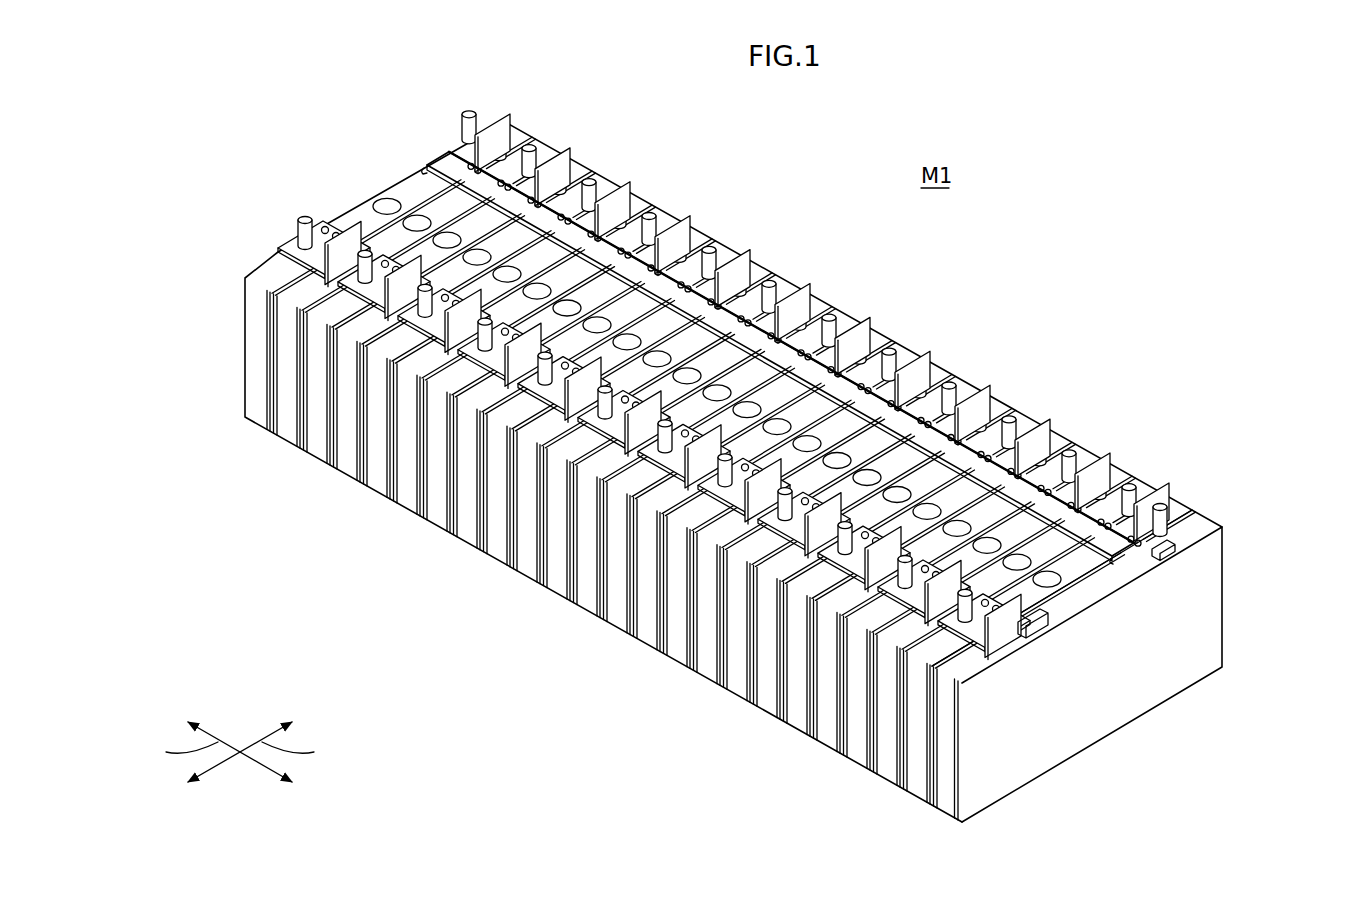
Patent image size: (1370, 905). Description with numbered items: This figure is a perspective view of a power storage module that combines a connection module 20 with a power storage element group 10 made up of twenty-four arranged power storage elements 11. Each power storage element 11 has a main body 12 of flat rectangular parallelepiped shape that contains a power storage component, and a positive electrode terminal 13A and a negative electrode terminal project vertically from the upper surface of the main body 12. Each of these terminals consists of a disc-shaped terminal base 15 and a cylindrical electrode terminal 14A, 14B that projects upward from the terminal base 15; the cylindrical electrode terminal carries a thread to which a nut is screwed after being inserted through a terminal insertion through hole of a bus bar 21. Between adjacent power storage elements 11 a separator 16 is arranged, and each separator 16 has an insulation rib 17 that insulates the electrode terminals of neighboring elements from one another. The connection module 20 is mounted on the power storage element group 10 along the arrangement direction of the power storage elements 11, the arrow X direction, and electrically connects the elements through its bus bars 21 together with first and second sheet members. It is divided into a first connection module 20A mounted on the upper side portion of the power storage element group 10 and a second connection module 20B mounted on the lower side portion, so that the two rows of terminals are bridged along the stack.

The power storage element group 10 is at (215, 480).
The power storage element 11 is at (258, 417).
The main body 12 is at (1110, 582).
The positive electrode terminal 13A is at (1248, 479).
The electrode terminal 14A is at (1168, 507).
The electrode terminal 14B is at (1160, 505).
The terminal base 15 is at (1163, 552).
The separator 16 is at (1010, 410).
The insulation rib 17 is at (968, 386).
The connection module 20 is at (426, 70).
The first connection module 20A is at (758, 324).
The second connection module 20B is at (272, 236).
The bus bar 21 is at (1052, 458).